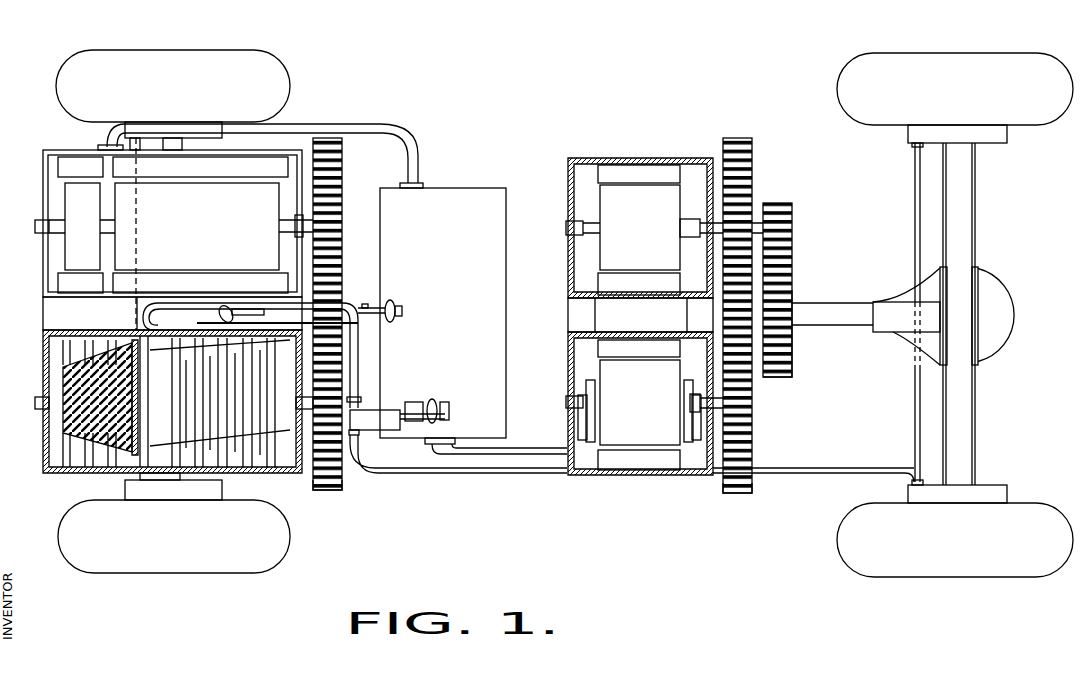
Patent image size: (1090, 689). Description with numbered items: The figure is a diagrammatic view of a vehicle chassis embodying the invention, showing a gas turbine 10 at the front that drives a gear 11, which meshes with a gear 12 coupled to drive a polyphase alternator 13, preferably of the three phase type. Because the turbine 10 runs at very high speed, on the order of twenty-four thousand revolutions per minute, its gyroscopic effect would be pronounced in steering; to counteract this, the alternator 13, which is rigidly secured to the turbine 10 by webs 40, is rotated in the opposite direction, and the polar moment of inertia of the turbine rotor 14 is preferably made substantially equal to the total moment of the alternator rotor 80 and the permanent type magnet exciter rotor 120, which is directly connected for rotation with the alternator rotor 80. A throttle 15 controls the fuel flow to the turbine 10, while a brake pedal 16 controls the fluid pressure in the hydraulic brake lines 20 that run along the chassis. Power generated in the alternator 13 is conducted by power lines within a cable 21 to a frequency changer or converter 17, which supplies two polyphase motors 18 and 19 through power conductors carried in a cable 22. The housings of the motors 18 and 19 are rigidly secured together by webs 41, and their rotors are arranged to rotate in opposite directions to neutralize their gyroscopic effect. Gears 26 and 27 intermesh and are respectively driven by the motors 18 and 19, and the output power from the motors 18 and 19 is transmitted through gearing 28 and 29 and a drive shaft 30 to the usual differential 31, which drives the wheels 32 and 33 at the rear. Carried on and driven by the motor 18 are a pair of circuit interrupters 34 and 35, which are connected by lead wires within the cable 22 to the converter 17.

The gas turbine 10 is at (36, 436).
The gear 11 is at (332, 493).
The gear 12 is at (340, 252).
The polyphase alternator 13 is at (36, 274).
The turbine rotor 14 is at (160, 411).
The throttle 15 is at (210, 312).
The brake pedal 16 is at (414, 403).
The frequency changer or converter 17 is at (462, 239).
The polyphase motor 18 is at (650, 399).
The polyphase motor 19 is at (648, 224).
The hydraulic brake lines 20 is at (140, 213).
The cable 21 is at (383, 125).
The cable 22 is at (528, 453).
The gear 26 is at (755, 428).
The gear 27 is at (756, 157).
The gearing 28 is at (795, 216).
The gearing 29 is at (795, 287).
The drive shaft 30 is at (833, 324).
The differential 31 is at (988, 293).
The wheel 32 is at (970, 56).
The wheel 33 is at (853, 568).
The circuit interrupter 34 is at (597, 418).
The circuit interrupter 35 is at (684, 420).
The webs 40 is at (61, 315).
The webs 41 is at (685, 315).
The alternator rotor 80 is at (238, 221).
The permanent type magnet exciter rotor 120 is at (80, 225).